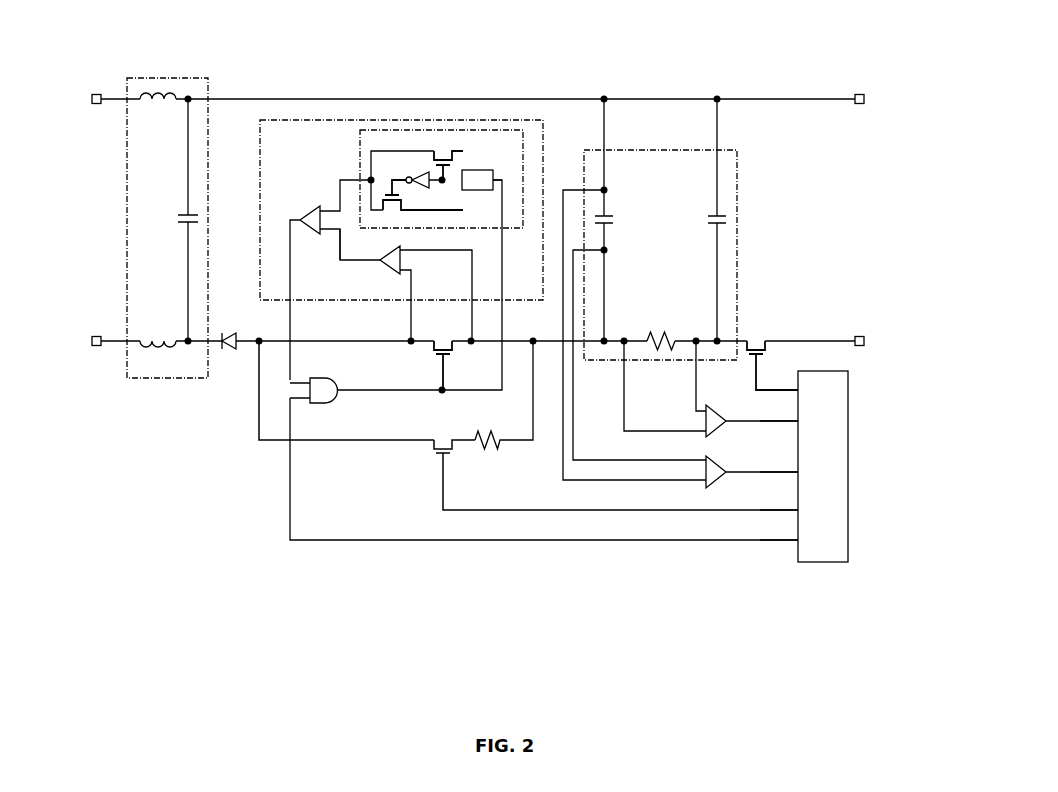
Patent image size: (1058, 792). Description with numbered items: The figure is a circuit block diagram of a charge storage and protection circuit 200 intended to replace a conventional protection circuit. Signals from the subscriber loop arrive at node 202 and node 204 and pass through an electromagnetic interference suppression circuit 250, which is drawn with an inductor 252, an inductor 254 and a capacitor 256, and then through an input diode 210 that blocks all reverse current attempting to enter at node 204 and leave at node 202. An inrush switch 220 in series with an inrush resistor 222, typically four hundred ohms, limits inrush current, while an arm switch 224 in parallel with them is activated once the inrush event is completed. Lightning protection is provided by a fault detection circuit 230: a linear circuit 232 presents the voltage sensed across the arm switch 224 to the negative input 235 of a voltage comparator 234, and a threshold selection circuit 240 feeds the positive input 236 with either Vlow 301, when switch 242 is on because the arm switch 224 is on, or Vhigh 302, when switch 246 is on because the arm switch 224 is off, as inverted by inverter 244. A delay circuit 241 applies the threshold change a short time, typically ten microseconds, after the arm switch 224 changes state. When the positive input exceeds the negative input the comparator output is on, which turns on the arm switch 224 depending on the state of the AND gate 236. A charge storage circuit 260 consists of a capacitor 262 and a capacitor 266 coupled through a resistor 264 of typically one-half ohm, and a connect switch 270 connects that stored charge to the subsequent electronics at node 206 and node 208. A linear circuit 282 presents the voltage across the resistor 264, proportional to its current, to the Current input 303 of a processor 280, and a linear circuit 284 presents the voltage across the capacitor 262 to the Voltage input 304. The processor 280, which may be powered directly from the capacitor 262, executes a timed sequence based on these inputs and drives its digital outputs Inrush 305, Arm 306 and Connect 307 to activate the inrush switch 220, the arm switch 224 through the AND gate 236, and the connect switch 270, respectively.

The charge storage and protection circuit 200 is at (478, 296).
The node 202 is at (99, 108).
The node 204 is at (100, 330).
The node 206 is at (857, 110).
The node 208 is at (858, 333).
The diode circuit 210 is at (231, 352).
The inrush switch 220 is at (452, 460).
The inrush resistor 222 is at (491, 460).
The arm switch 224 is at (452, 360).
The fault detection circuit 230 is at (508, 302).
The linear circuit 232 is at (376, 271).
The voltage comparator 234 is at (297, 210).
The negative input 235 is at (315, 252).
The AND logic circuit 236 is at (331, 376).
The threshold selection circuit 240 is at (508, 230).
The delay circuit 241 is at (491, 169).
The switch 242 is at (439, 148).
The inverter 244 is at (422, 190).
The switch 246 is at (391, 211).
The electromagnetic interference suppression circuit 250 is at (158, 380).
The return inductor 252 is at (157, 340).
The input inductor 254 is at (158, 103).
The filter capacitor 256 is at (179, 213).
The charge storage circuit 260 is at (644, 152).
The capacitor 262 is at (614, 232).
The resistor 264 is at (665, 320).
The capacitor 266 is at (706, 240).
The connect switch 270 is at (758, 331).
The processor 280 is at (805, 371).
The linear circuit 282 is at (730, 438).
The linear circuit 284 is at (730, 489).
The Vlow 301 is at (491, 143).
The Vhigh 302 is at (497, 202).
The Current analog input 303 is at (847, 421).
The Voltage analog input 304 is at (838, 466).
The Inrush digital output 305 is at (835, 512).
The Arm digital output 306 is at (828, 543).
The Connect digital output 307 is at (847, 389).